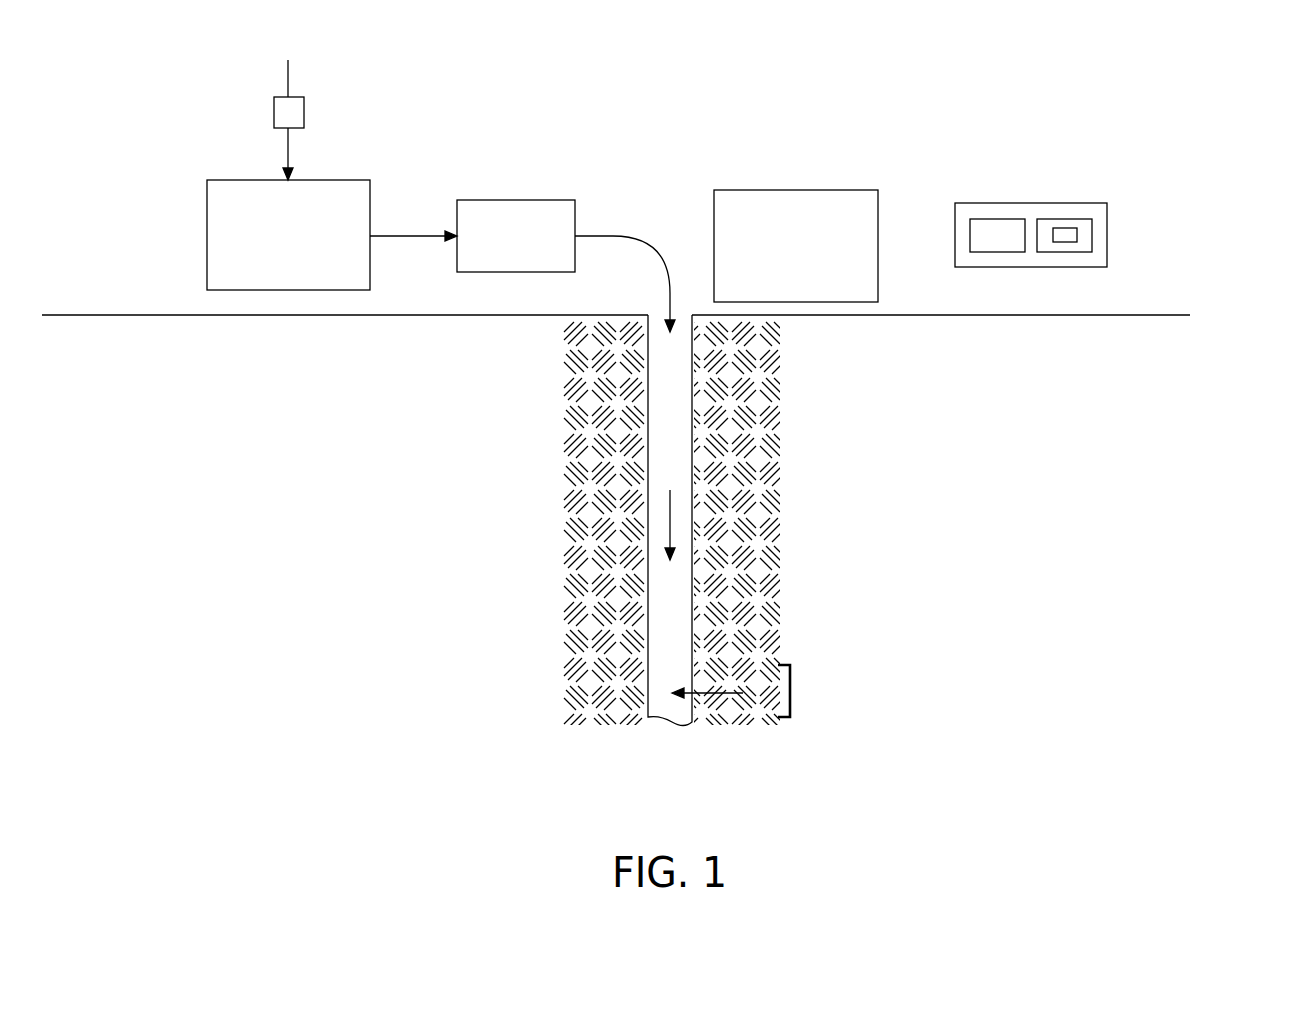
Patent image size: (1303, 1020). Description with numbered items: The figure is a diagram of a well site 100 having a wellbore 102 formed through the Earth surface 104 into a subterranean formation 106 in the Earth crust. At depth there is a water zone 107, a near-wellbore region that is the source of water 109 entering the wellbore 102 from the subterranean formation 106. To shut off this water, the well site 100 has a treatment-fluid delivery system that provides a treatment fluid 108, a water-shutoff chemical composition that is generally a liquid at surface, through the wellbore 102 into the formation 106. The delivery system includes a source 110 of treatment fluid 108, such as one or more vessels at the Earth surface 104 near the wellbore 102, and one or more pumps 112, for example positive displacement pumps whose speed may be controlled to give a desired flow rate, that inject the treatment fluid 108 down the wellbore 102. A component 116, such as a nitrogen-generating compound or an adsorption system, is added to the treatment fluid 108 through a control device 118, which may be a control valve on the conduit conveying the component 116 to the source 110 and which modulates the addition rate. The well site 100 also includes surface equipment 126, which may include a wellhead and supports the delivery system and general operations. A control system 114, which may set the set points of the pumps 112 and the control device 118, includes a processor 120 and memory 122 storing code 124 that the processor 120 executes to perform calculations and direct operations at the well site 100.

The well site 100 is at (688, 838).
The wellbore 102 is at (647, 483).
The Earth surface 104 is at (1188, 315).
The subterranean formation 106 is at (613, 617).
The water zone 107 is at (797, 688).
The treatment fluid 108 is at (603, 235).
The water 109 is at (713, 693).
The source of treatment fluid 110 is at (335, 180).
The pump 112 is at (509, 200).
The control system 114 is at (993, 203).
The component 116 is at (287, 78).
The control device 118 is at (274, 110).
The processor 120 is at (998, 237).
The memory 122 is at (1093, 235).
The code 124 is at (1065, 240).
The surface equipment 126 is at (818, 190).